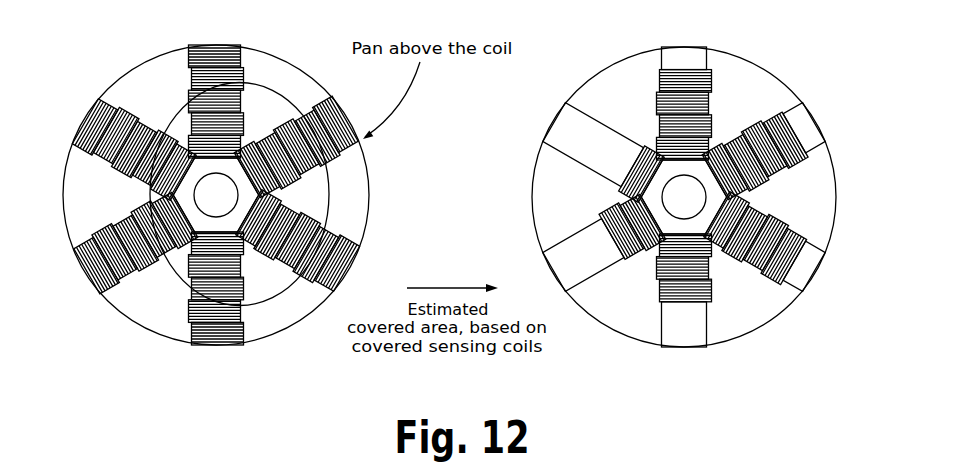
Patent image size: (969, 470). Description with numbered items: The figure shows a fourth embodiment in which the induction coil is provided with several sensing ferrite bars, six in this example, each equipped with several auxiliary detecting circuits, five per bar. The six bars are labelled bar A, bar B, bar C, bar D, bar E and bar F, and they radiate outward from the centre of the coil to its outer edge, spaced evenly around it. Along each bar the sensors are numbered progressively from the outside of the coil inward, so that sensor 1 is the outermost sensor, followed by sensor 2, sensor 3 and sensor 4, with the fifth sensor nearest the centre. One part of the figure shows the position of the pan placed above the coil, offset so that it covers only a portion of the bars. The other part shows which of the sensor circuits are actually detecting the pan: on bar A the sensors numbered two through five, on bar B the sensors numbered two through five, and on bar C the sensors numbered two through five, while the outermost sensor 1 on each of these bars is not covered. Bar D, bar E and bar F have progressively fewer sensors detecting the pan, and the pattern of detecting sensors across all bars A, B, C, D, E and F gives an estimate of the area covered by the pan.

The sensor 1 is at (677, 77).
The sensor 2 is at (675, 99).
The sensor 3 is at (677, 121).
The sensor 4 is at (675, 143).
The bar A is at (450, 91).
The bar B is at (533, 149).
The bar C is at (534, 243).
The bar D is at (450, 301).
The bar E is at (365, 243).
The bar F is at (365, 149).